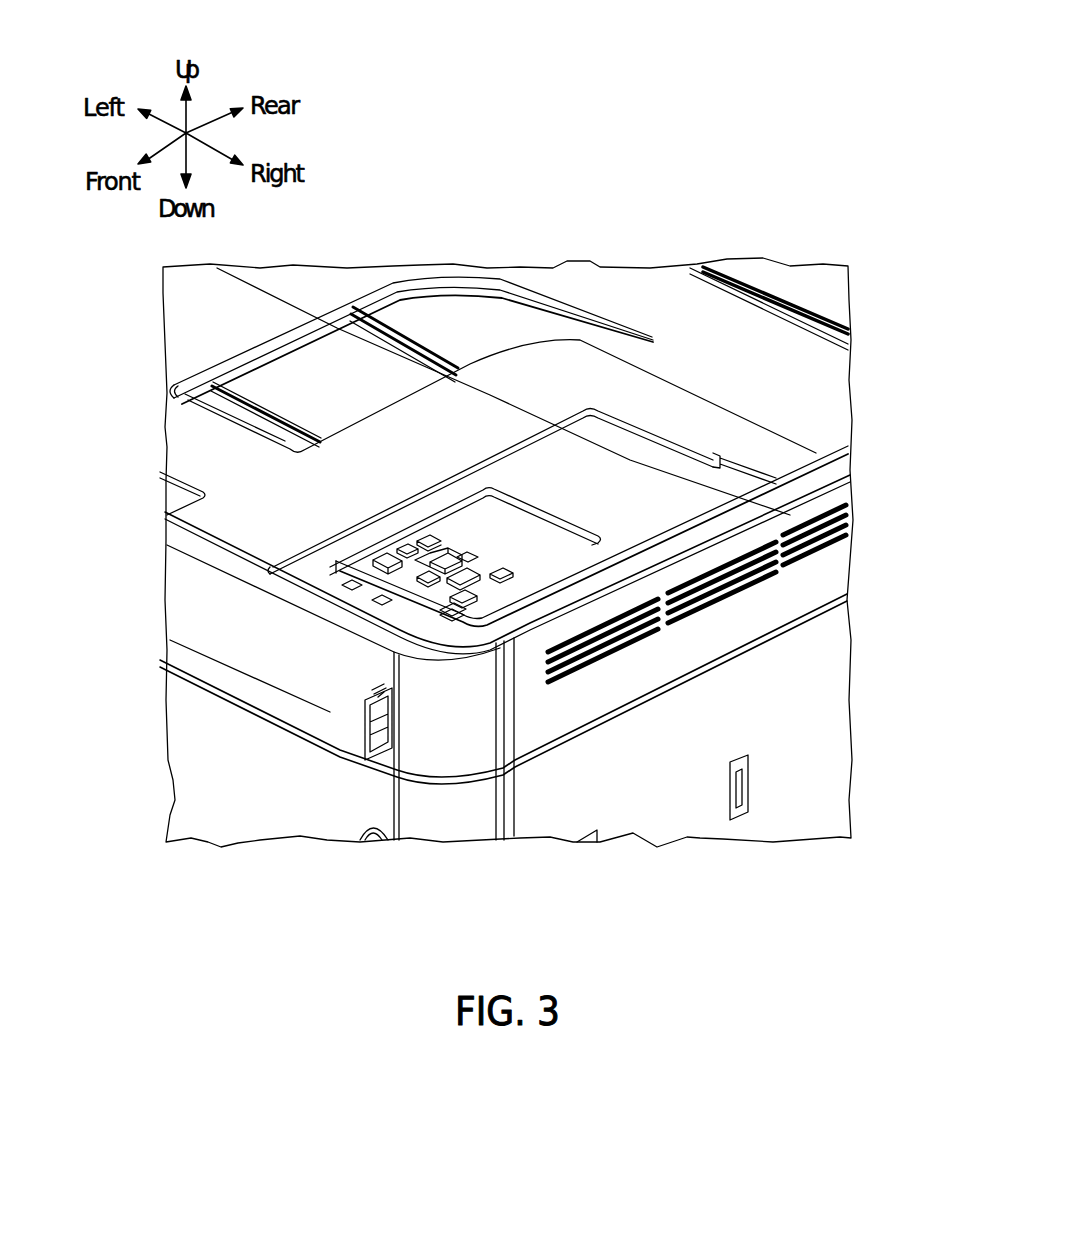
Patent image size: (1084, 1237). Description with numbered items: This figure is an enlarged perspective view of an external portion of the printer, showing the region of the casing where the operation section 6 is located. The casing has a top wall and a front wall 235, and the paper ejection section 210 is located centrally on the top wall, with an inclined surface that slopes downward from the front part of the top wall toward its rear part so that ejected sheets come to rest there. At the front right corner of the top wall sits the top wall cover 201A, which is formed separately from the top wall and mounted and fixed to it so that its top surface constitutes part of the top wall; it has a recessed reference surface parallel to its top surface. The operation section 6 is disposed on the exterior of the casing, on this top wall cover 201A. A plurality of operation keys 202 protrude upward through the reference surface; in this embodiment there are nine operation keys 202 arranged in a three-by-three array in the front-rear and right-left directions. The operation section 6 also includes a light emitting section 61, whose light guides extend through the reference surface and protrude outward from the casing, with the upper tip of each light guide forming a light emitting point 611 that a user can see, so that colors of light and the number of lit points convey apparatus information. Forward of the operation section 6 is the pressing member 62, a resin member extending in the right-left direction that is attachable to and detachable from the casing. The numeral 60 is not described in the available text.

The operation section 6 is at (556, 497).
The operation panel 60 is at (548, 547).
The light emitting section 61 is at (450, 620).
The light emitting point 611 is at (464, 578).
The pressing member 62 is at (448, 615).
The operation keys 202 is at (378, 552).
The paper ejection section 210 is at (642, 292).
The top wall cover 201A is at (673, 500).
The front wall 235 is at (289, 683).